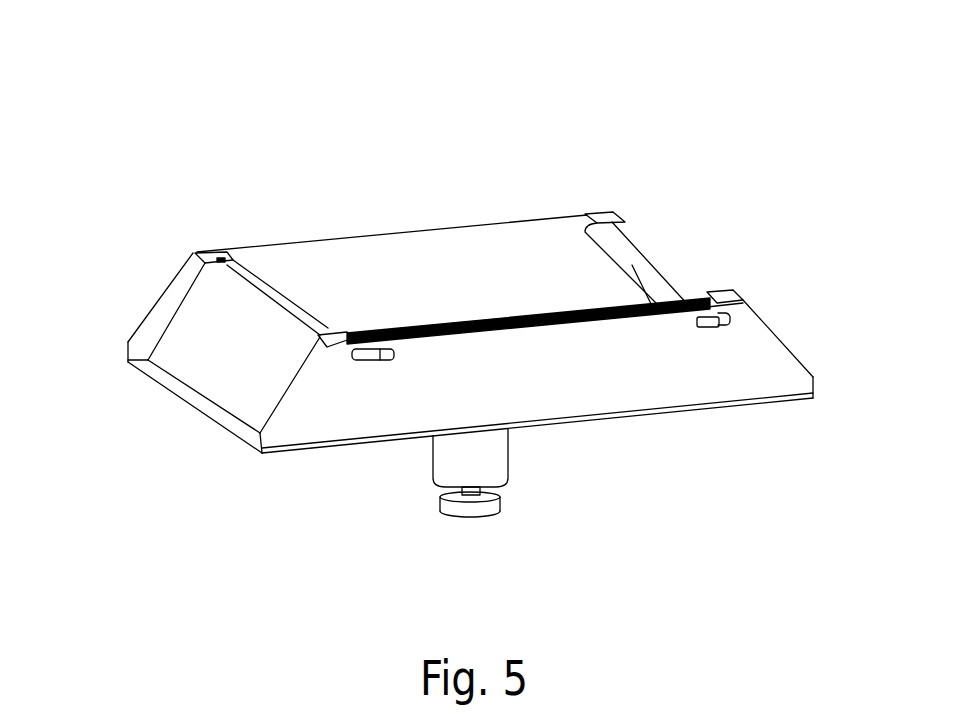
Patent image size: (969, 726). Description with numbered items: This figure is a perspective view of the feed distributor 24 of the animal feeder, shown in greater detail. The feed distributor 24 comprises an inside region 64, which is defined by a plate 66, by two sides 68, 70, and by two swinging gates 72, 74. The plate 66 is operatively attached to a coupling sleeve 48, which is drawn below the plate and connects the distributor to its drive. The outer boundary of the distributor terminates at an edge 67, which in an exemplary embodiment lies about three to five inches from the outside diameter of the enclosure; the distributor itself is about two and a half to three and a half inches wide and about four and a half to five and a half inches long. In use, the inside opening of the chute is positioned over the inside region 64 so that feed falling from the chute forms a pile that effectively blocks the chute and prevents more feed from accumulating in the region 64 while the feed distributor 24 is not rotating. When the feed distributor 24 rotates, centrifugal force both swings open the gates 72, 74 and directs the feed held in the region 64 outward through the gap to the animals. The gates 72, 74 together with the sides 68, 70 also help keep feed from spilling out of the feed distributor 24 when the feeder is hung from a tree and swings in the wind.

The feed distributor 24 is at (540, 175).
The coupling sleeve 48 is at (485, 462).
The inside region 64 is at (472, 278).
The plate 66 is at (595, 418).
The edge 67 is at (207, 418).
The side 68 is at (733, 350).
The side 70 is at (315, 265).
The swinging gate 72 is at (670, 280).
The swinging gate 74 is at (235, 320).